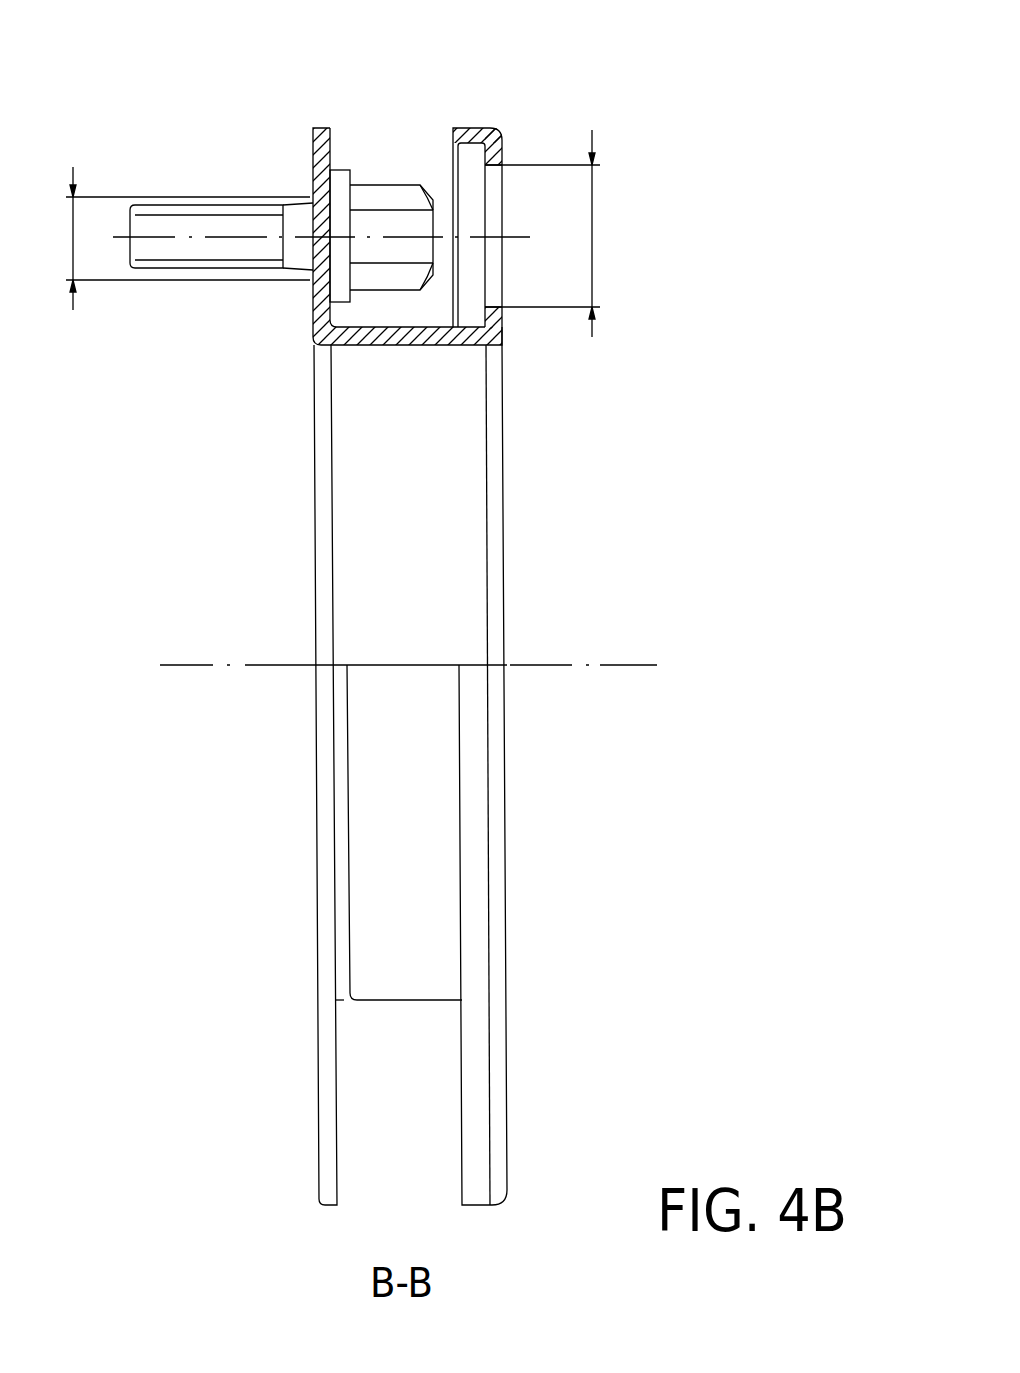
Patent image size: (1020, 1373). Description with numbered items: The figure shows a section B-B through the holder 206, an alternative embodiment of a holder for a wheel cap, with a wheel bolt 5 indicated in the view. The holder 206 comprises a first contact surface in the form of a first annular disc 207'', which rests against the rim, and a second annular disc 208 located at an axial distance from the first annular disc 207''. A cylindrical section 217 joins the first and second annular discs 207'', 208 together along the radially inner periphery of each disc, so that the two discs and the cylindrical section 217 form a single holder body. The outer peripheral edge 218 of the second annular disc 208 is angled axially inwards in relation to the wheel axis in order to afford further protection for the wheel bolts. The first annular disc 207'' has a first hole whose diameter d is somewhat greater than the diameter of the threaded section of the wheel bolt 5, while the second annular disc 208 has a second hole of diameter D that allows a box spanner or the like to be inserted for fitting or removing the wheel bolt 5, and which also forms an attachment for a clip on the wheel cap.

The wheel bolt 5 is at (380, 195).
The outer peripheral edge 218 is at (473, 127).
The first annular disc 207'' is at (191, 286).
The second annular disc 208 is at (503, 368).
The cylindrical section 217 is at (403, 343).
The holder 206 is at (558, 810).